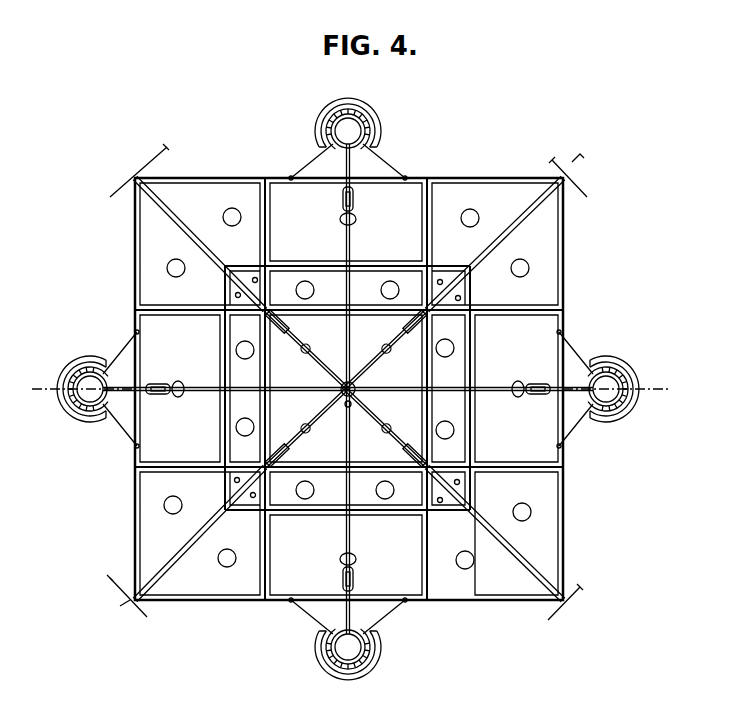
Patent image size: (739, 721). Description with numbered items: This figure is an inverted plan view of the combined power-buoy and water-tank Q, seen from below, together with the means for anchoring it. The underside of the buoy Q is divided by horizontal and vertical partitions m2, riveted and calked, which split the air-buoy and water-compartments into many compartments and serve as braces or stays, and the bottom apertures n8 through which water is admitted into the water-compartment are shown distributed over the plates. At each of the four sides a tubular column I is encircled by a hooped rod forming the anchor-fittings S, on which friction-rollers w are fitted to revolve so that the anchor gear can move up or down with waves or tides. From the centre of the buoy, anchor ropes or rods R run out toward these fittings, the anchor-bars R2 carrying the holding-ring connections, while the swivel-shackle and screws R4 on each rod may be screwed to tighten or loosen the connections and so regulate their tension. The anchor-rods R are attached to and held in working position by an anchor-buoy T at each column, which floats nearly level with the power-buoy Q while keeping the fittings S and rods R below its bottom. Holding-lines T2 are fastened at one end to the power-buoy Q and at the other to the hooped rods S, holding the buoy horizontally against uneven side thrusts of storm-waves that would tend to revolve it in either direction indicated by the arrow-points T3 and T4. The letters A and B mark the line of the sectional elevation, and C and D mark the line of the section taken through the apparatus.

The power-buoy Q is at (133, 248).
The partitions m2 is at (190, 232).
The bottom apertures n8 is at (225, 214).
The anchor ropes or rods R is at (354, 252).
The anchor-bars R2 is at (385, 355).
The swivel-shackle and screws R4 is at (358, 197).
The anchor-fittings S is at (353, 102).
The anchor-buoy T is at (382, 121).
The tubular columns I is at (322, 122).
The friction-rollers w is at (334, 111).
The holding-lines T2 is at (311, 159).
The arrow-point T3 is at (348, 378).
The arrow-point T4 is at (351, 376).
The section line A B A is at (77, 387).
The section line A B is at (615, 388).
The section line C D C is at (118, 607).
The section line C D is at (580, 153).